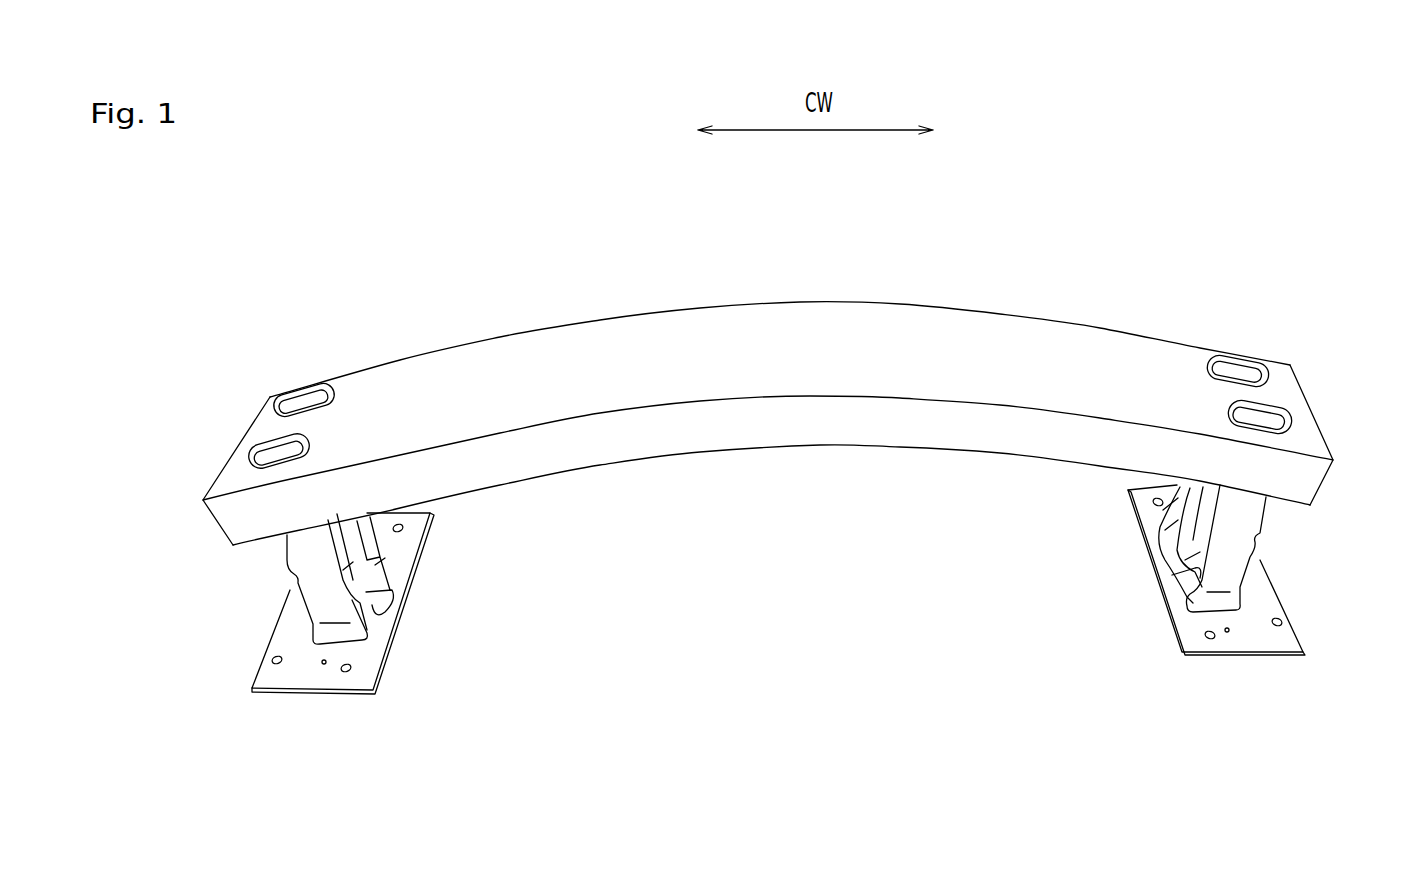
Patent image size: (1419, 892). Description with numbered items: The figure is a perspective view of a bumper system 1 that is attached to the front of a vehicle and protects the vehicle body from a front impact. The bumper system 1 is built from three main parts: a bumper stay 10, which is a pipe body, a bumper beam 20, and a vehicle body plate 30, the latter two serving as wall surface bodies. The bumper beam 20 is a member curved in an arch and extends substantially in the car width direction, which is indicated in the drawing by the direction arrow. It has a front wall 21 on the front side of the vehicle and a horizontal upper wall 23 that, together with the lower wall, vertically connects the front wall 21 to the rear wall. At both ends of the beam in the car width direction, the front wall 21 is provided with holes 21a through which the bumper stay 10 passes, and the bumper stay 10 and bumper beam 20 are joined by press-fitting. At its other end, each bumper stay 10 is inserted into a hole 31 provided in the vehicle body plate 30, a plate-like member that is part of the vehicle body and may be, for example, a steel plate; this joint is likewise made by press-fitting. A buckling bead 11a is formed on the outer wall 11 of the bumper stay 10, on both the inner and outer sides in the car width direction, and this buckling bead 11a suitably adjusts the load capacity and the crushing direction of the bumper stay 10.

The bumper system 1 is at (1204, 291).
The bumper beam 20 is at (537, 350).
The front wall 21 is at (1102, 350).
The hole 21a is at (263, 437).
The upper wall 23 is at (917, 430).
The bumper stay 10 is at (287, 537).
The outer wall 11 is at (367, 608).
The buckling bead 11a is at (285, 582).
The vehicle body plate 30 is at (292, 692).
The hole 31 is at (358, 690).